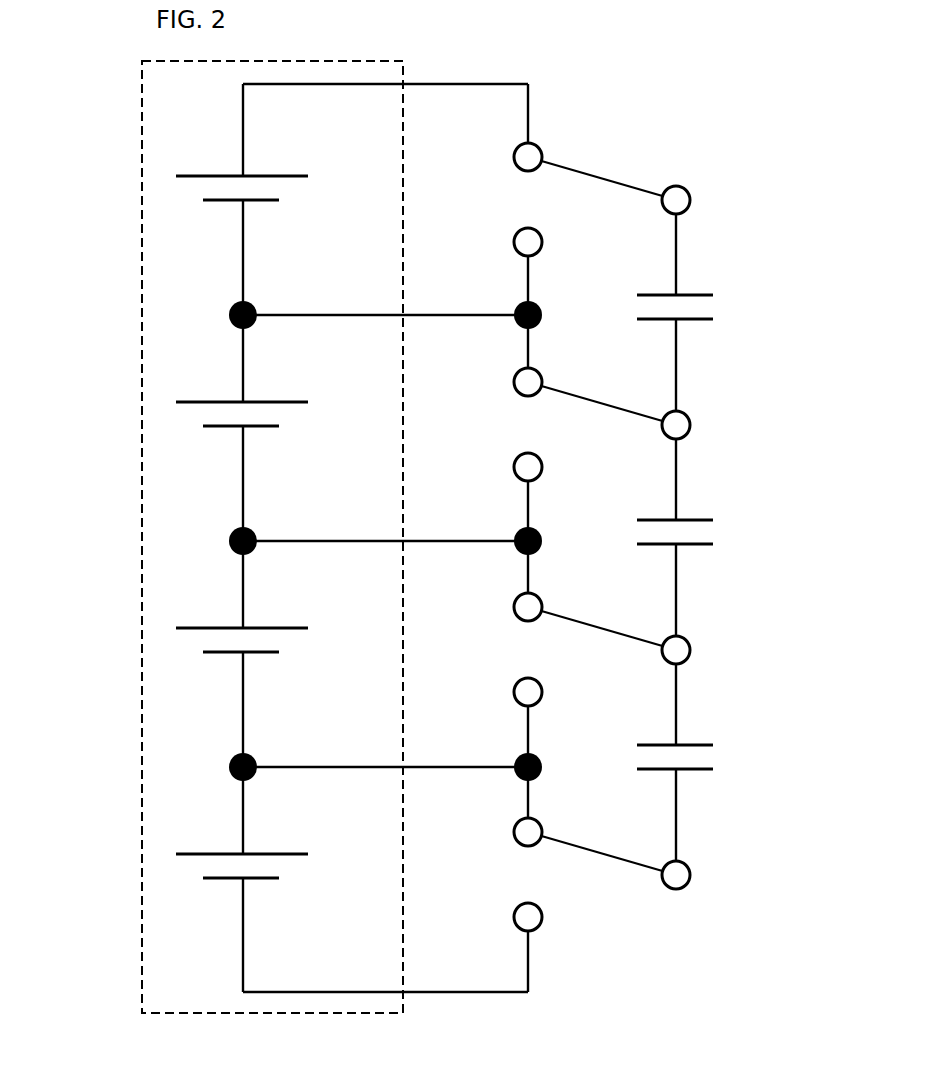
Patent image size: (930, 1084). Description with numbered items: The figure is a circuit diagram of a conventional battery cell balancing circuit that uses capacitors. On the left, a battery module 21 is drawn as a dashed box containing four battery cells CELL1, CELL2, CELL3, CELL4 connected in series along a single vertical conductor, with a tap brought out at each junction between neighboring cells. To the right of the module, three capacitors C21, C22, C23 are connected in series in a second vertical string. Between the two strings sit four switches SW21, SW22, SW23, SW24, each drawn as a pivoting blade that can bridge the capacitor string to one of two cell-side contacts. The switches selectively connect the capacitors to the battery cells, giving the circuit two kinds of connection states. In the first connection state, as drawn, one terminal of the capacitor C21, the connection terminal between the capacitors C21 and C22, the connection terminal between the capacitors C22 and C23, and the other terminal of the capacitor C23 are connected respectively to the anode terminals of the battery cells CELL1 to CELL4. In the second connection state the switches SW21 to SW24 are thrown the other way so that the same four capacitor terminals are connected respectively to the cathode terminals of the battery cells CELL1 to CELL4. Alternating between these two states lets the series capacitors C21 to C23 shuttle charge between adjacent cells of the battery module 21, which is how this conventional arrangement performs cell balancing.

The battery module 21 is at (142, 271).
The battery cell CELL1 is at (275, 161).
The battery cell CELL2 is at (275, 387).
The battery cell CELL3 is at (275, 613).
The battery cell CELL4 is at (275, 839).
The switch SW21 is at (602, 199).
The switch SW22 is at (602, 424).
The switch SW23 is at (602, 649).
The switch SW24 is at (602, 874).
The capacitor C21 is at (721, 309).
The capacitor C22 is at (721, 534).
The capacitor C23 is at (721, 759).